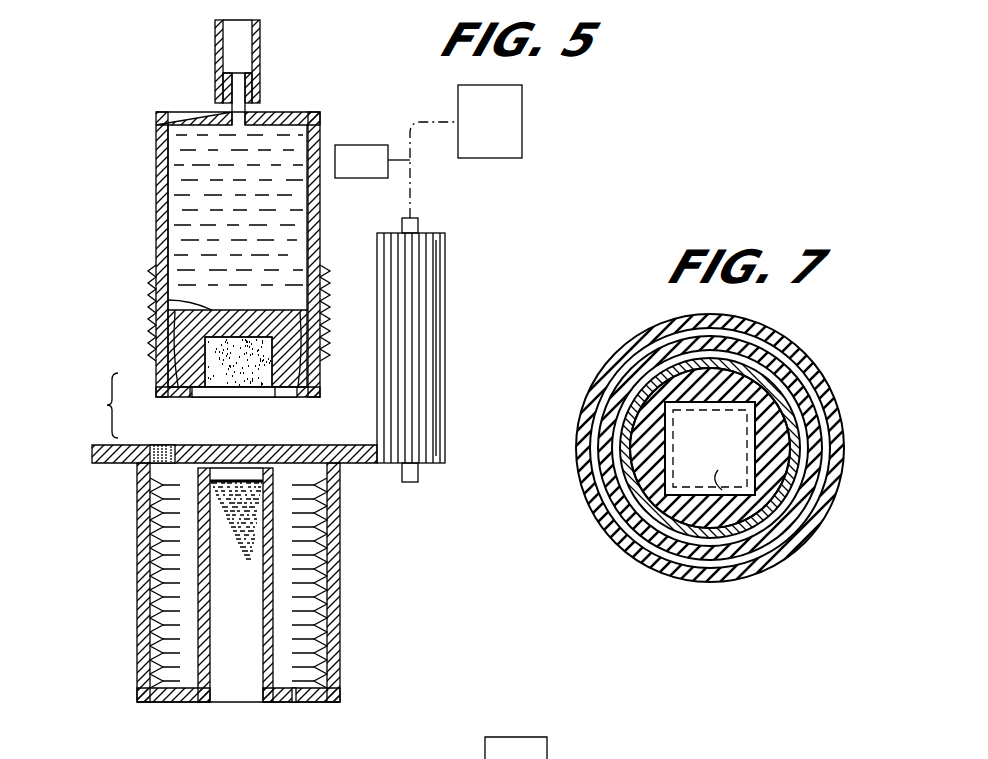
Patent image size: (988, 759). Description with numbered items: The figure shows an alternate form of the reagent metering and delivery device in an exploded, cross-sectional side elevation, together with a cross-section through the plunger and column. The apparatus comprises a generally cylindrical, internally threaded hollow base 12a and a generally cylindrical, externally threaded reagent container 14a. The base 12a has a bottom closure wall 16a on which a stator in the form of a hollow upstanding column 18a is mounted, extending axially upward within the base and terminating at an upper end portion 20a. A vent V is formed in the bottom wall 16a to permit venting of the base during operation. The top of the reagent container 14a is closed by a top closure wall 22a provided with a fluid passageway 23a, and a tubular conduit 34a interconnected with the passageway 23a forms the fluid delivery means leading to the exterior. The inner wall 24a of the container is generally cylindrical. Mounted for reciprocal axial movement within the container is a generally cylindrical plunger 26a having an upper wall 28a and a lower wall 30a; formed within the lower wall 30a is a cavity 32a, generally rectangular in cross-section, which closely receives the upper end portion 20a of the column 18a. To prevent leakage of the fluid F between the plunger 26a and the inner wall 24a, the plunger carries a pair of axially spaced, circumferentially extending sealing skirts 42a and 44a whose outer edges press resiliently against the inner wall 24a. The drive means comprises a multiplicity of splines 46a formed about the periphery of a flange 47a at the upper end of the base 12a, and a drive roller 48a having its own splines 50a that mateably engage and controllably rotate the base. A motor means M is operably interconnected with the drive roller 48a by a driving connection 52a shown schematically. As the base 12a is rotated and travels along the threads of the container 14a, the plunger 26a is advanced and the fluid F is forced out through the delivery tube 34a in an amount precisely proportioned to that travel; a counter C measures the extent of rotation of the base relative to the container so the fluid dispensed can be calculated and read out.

In FIG. 5, the tubular conduit 34a is at (215, 34).
In FIG. 5, the fluid passageway 23a is at (228, 90).
In FIG. 5, the top closure wall 22a is at (288, 112).
In FIG. 5, the reagent container 14a is at (146, 242).
In FIG. 7, the reagent container 14a is at (812, 414).
In FIG. 5, the fluid F is at (172, 160).
In FIG. 5, the inner wall 24a is at (162, 202).
In FIG. 5, the upper wall 28a is at (168, 283).
In FIG. 5, the plunger 26a is at (174, 325).
In FIG. 7, the plunger 26a is at (776, 387).
In FIG. 5, the sealing skirt 42a is at (300, 314).
In FIG. 5, the sealing skirt 44a is at (300, 382).
In FIG. 5, the cavity 32a is at (262, 388).
In FIG. 7, the cavity 32a is at (757, 480).
In FIG. 5, the lower wall 30a is at (196, 395).
In FIG. 5, the splines 46a is at (92, 452).
In FIG. 5, the flange 47a is at (110, 464).
In FIG. 5, the hollow base 12a is at (351, 606).
In FIG. 7, the hollow base 12a is at (812, 356).
In FIG. 5, the upper end portion 20a is at (256, 474).
In FIG. 7, the upper end portion 20a is at (695, 420).
In FIG. 5, the upstanding column 18a is at (262, 580).
In FIG. 7, the upstanding column 18a is at (668, 484).
In FIG. 5, the bottom closure wall 16a is at (216, 704).
In FIG. 5, the vent V is at (294, 703).
In FIG. 5, the drive roller 48a is at (457, 311).
In FIG. 5, the splines 50a is at (436, 332).
In FIG. 5, the driving connection 52a is at (412, 196).
In FIG. 5, the motor means M is at (490, 121).
In FIG. 5, the counter C is at (361, 161).